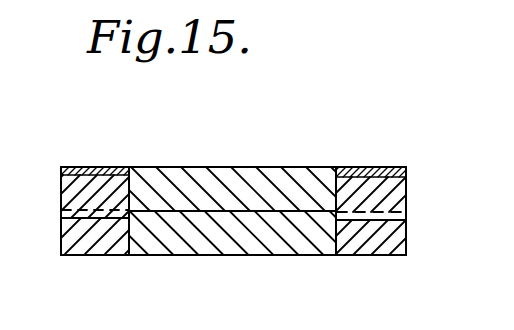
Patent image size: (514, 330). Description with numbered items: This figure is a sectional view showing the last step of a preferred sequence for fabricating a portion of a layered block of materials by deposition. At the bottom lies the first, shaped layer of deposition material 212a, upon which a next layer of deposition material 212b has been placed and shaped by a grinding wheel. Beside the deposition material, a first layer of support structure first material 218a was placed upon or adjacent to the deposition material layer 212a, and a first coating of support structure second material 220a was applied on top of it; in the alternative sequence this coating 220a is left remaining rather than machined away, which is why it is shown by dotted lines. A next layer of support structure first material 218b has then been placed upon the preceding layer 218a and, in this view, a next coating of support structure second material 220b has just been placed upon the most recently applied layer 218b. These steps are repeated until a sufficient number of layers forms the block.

The next coating of support structure second material 220b is at (80, 167).
The next layer of support structure first material 218b is at (107, 193).
The next layer of deposition material 212b is at (233, 185).
The deposition material layer 212a is at (231, 228).
The first layer of support structure first material 218a is at (358, 247).
The first coating of support structure second material 220a is at (407, 219).